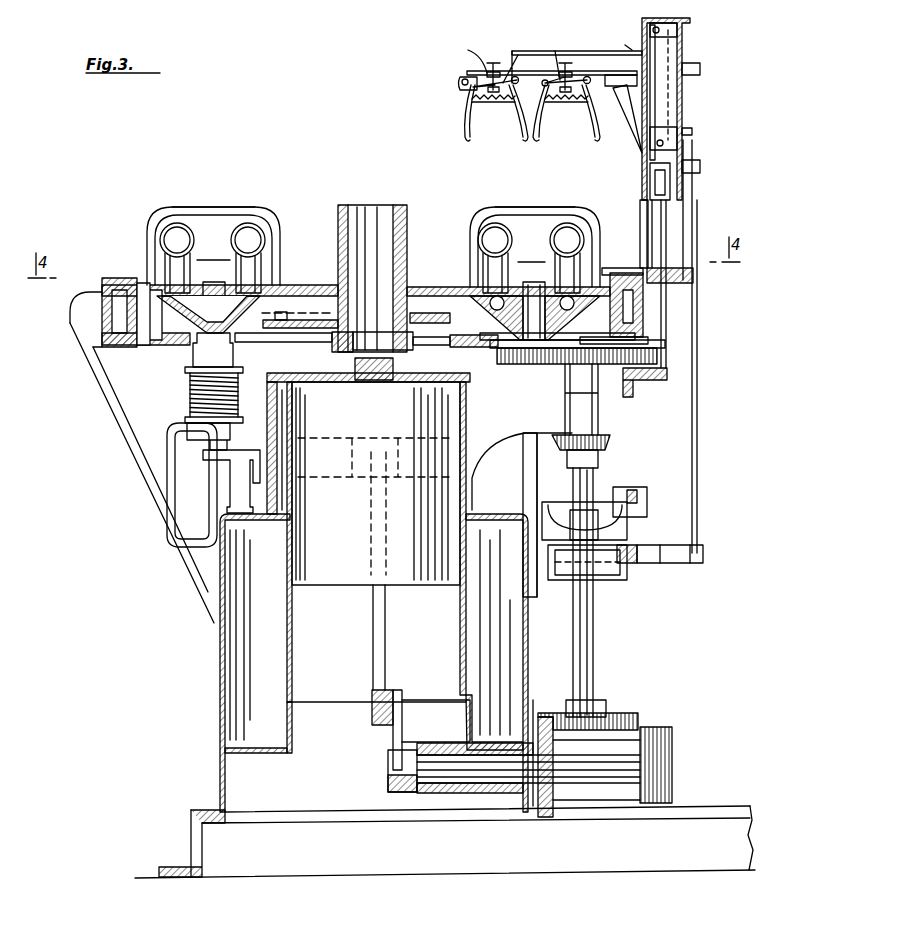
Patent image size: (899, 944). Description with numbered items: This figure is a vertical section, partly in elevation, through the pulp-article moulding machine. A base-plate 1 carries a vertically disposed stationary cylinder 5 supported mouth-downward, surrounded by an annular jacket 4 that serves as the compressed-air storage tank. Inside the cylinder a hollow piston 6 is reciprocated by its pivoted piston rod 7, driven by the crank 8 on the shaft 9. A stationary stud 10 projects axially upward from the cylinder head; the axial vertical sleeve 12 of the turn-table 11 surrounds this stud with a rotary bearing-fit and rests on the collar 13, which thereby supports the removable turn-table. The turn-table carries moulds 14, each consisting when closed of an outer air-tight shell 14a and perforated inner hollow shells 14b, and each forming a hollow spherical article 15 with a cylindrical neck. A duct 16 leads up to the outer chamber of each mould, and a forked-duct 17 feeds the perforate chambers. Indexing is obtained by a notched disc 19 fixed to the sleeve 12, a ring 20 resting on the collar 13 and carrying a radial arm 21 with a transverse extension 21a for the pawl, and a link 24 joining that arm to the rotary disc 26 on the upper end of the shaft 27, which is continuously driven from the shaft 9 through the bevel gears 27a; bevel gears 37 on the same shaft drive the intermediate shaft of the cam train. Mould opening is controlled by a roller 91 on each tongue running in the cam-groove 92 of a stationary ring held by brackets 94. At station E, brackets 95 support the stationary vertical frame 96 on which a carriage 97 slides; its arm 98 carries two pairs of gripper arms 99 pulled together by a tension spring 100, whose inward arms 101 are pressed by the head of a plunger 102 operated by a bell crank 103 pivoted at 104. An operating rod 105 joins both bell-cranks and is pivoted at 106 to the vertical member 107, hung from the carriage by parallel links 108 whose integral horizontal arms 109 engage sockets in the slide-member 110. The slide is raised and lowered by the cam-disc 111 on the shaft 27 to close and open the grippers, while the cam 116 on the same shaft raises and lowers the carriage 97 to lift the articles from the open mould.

The base-plate 1 is at (190, 838).
The annular jacket 4 is at (220, 662).
The cylinder 5 is at (288, 570).
The piston 6 is at (340, 578).
The piston rod 7 is at (388, 622).
The crank 8 is at (402, 733).
The shaft 9 is at (490, 780).
The stud 10 is at (378, 205).
The turn-table 11 is at (142, 283).
The sleeve 12 is at (338, 215).
The collar 13 is at (300, 372).
The mould 14 is at (240, 200).
The outer air-tight shell 14a is at (213, 206).
The inner hollow shell 14b is at (228, 242).
The article 15 is at (177, 223).
The duct 16 is at (212, 282).
The forked-duct 17 is at (378, 318).
The notched disc 19 is at (290, 318).
The ring 20 is at (330, 338).
The radial arm 21 is at (428, 348).
The transverse extension 21a is at (470, 350).
The link 24 is at (540, 350).
The rotary disc 26 is at (548, 370).
The shaft 27 is at (598, 475).
The bevel gears 27a is at (556, 750).
The bevel gears 37 is at (608, 440).
The roller 91 is at (633, 315).
The cam-groove 92 is at (620, 292).
The bracket 94 is at (648, 338).
The bracket 95 is at (604, 285).
The frame 96 is at (640, 182).
The carriage 97 is at (670, 180).
The arm 98 is at (522, 73).
The gripper arm 99 is at (515, 136).
The tension spring 100 is at (490, 102).
The inwardly directed arm 101 is at (459, 71).
The plunger 102 is at (478, 68).
The bell crank 103 is at (503, 60).
The pivot 104 is at (518, 75).
The operating rod 105 is at (603, 48).
The pivot connection 106 is at (615, 48).
The vertical member 107 is at (625, 115).
The parallel link 108 is at (660, 17).
The horizontal arm 109 is at (662, 32).
The slide-member 110 is at (684, 48).
The cam-disc 111 is at (640, 564).
The cam 116 is at (628, 524).